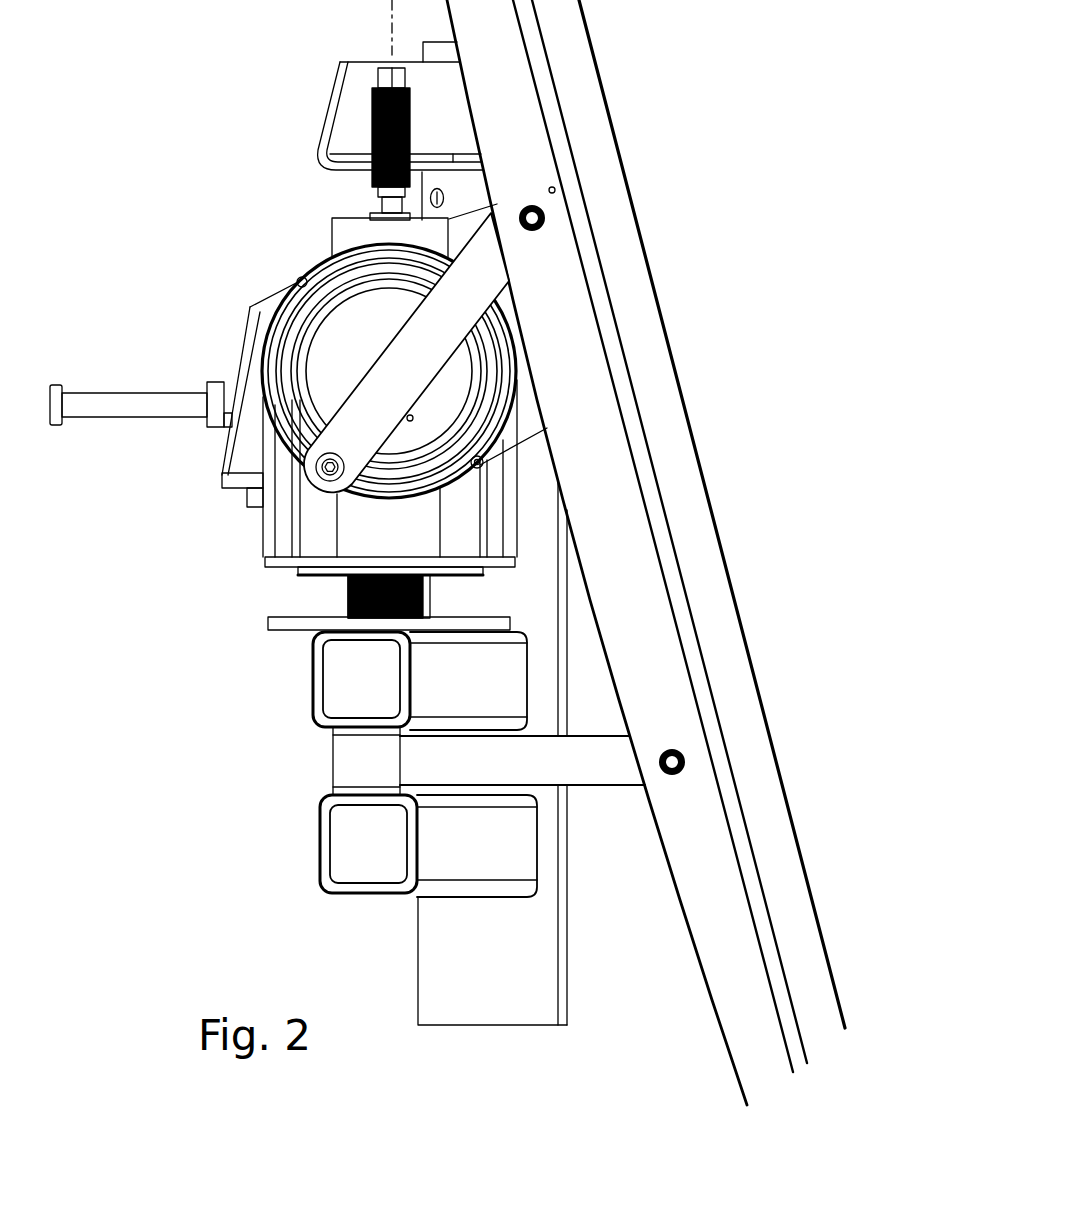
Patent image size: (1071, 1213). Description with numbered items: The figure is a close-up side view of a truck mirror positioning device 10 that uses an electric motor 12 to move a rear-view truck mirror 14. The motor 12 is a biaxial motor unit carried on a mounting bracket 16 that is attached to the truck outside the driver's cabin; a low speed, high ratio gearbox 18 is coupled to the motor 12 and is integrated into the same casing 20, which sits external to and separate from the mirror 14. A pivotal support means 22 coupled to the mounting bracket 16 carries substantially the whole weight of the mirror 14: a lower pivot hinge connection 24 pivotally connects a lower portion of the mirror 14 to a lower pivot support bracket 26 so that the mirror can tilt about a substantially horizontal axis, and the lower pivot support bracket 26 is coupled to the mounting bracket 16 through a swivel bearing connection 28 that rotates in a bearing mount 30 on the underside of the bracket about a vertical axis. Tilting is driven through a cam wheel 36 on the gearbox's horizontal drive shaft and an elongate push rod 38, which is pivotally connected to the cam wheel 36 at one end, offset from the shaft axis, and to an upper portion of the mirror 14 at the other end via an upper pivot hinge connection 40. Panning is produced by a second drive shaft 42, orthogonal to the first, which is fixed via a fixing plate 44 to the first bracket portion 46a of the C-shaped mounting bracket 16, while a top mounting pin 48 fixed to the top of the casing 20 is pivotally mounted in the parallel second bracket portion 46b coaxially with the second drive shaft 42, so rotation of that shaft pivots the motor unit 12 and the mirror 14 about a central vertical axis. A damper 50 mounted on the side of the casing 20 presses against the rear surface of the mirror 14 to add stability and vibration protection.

The truck mirror positioning device 10 is at (200, 137).
The electric motor 12 is at (497, 463).
The rear-view truck mirror 14 is at (722, 524).
The mounting bracket 16 is at (303, 672).
The gearbox 18 is at (262, 530).
The casing 20 is at (302, 283).
The pivotal support means 22 is at (402, 902).
The lower pivot hinge connection 24 is at (645, 800).
The lower pivot support bracket 26 is at (582, 775).
The swivel bearing connection 28 is at (318, 767).
The bearing mount 30 is at (303, 850).
The cam wheel 36 is at (328, 381).
The push rod 38 is at (383, 373).
The upper pivot hinge connection 40 is at (553, 257).
The second drive shaft 42 is at (430, 592).
The fixing plate 44 is at (267, 625).
The first bracket portion 46a is at (523, 628).
The second bracket portion 46b is at (332, 100).
The top mounting pin 48 is at (412, 125).
The damper 50 is at (140, 417).